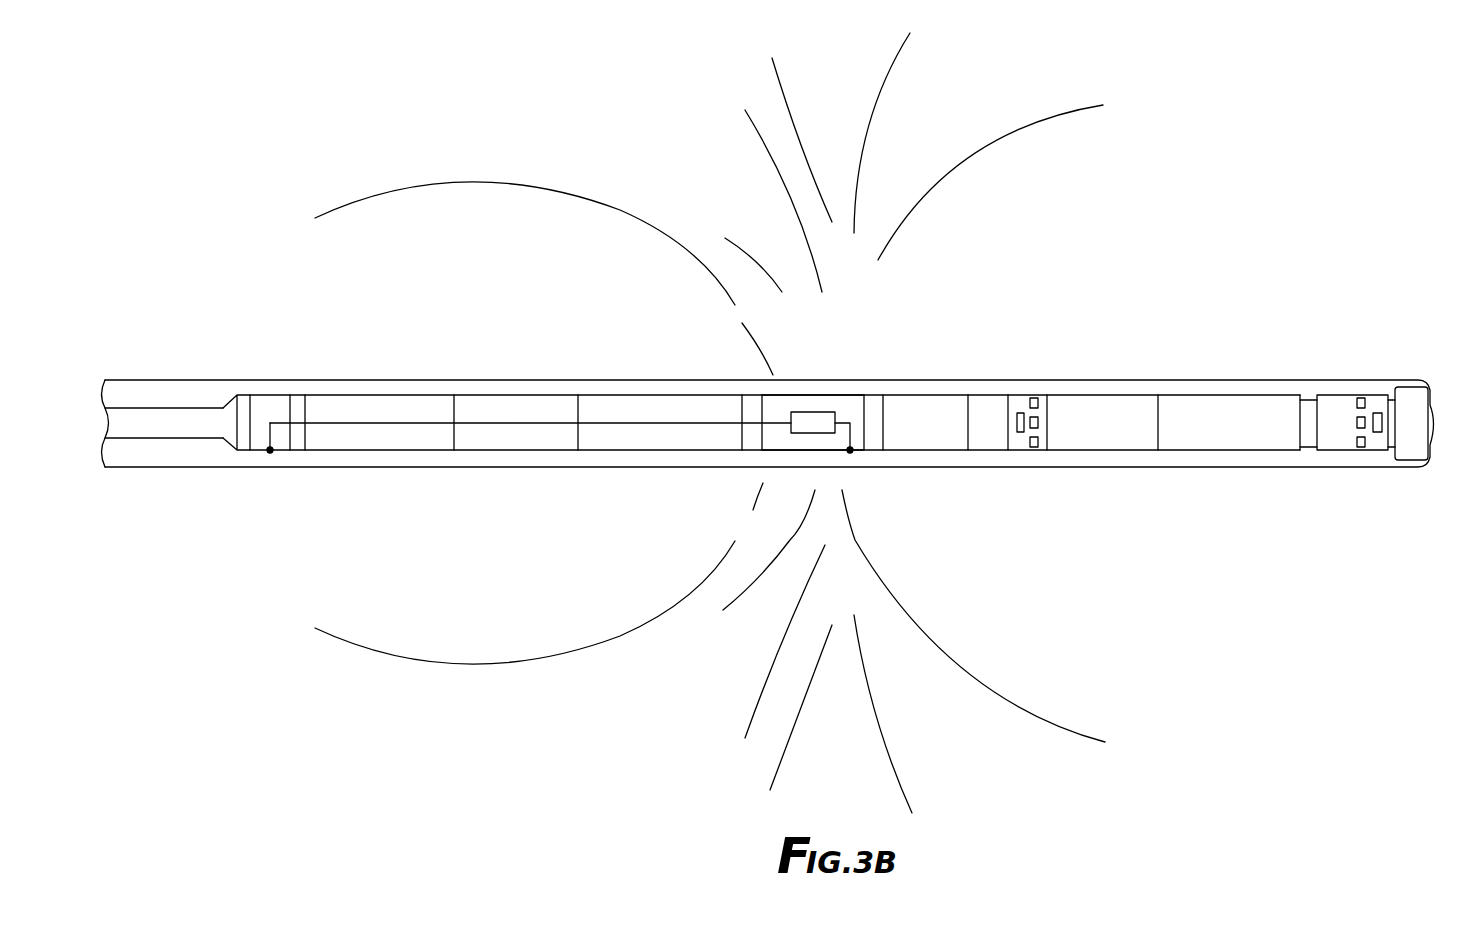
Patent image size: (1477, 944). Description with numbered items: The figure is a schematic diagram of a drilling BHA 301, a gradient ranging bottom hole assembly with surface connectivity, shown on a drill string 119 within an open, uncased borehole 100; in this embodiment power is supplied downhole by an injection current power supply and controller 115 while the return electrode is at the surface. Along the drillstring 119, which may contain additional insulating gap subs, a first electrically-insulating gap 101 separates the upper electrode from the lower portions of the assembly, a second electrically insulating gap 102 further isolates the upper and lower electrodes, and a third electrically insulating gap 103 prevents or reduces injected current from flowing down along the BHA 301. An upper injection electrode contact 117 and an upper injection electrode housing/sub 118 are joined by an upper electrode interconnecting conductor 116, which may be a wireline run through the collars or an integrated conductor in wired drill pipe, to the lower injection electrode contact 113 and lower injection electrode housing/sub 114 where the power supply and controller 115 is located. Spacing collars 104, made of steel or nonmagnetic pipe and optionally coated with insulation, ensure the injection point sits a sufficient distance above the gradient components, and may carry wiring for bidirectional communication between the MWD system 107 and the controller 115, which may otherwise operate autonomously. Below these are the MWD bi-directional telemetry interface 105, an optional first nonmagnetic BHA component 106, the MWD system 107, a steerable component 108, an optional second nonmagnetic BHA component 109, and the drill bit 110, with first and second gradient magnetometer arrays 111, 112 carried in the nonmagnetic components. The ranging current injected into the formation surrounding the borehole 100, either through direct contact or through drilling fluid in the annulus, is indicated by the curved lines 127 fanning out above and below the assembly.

The borehole 100 is at (622, 378).
The first electrically-insulating gap 101 is at (298, 405).
The second electrically insulating gap 102 is at (750, 405).
The third electrically insulating gap 103 is at (872, 408).
The spacing collars 104 is at (600, 407).
The MWD bi-directional telemetry interface 105 is at (981, 413).
The first nonmagnetic BHA component 106 is at (1018, 402).
The MWD system 107 is at (1093, 405).
The steerable component 108 is at (1188, 413).
The second nonmagnetic BHA component 109 is at (1333, 408).
The drill bit 110 is at (1410, 398).
The first gradient magnetometer array 111 is at (1038, 403).
The second gradient magnetometer array 112 is at (1357, 403).
The lower injection electrode contact 113 is at (850, 453).
The lower injection electrode housing/sub 114 is at (822, 403).
The injection current power supply and controller 115 is at (800, 425).
The upper electrode interconnecting conductor 116 is at (492, 425).
The upper injection electrode contact 117 is at (270, 453).
The upper injection electrode housing/sub 118 is at (263, 405).
The drill string 119 is at (173, 417).
The current flow lines 127 is at (1005, 137).
The drilling BHA 301 is at (612, 178).